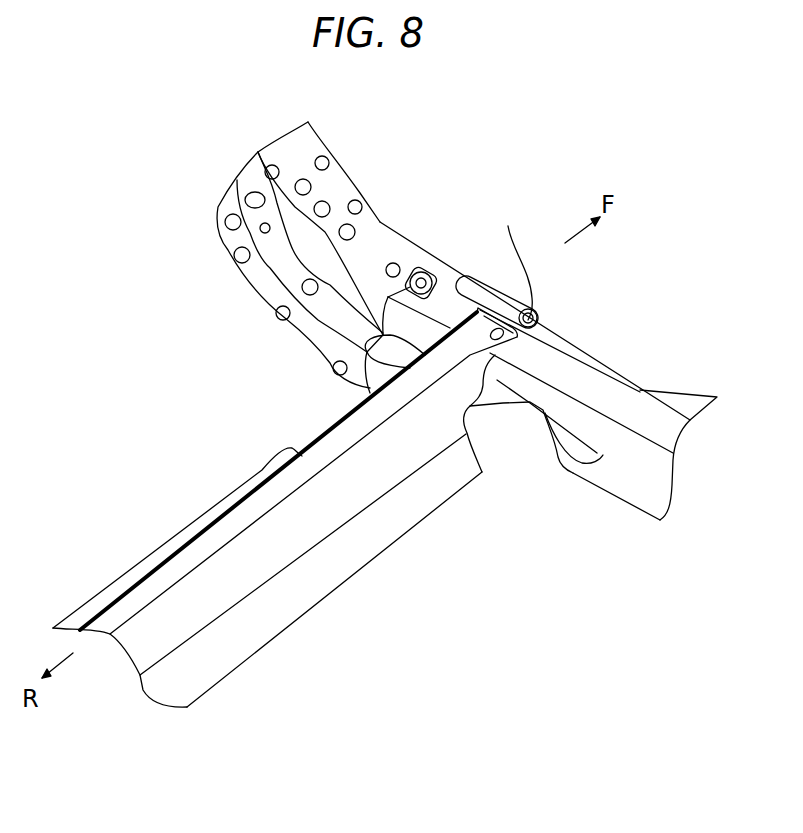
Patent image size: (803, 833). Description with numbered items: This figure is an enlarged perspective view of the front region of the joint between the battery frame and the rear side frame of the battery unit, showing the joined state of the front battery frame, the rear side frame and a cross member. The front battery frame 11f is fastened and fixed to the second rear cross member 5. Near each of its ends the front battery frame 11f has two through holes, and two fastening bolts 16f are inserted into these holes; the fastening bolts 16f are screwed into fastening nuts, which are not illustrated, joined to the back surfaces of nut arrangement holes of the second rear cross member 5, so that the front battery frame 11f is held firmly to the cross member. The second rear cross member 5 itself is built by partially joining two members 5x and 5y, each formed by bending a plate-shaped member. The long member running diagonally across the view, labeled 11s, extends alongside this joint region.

The second rear cross member 5 is at (263, 72).
The member 5x is at (293, 103).
The member 5y is at (252, 132).
The fastening bolt 16f is at (433, 258).
The front battery frame 11f is at (575, 375).
The side frame member 11s is at (215, 535).